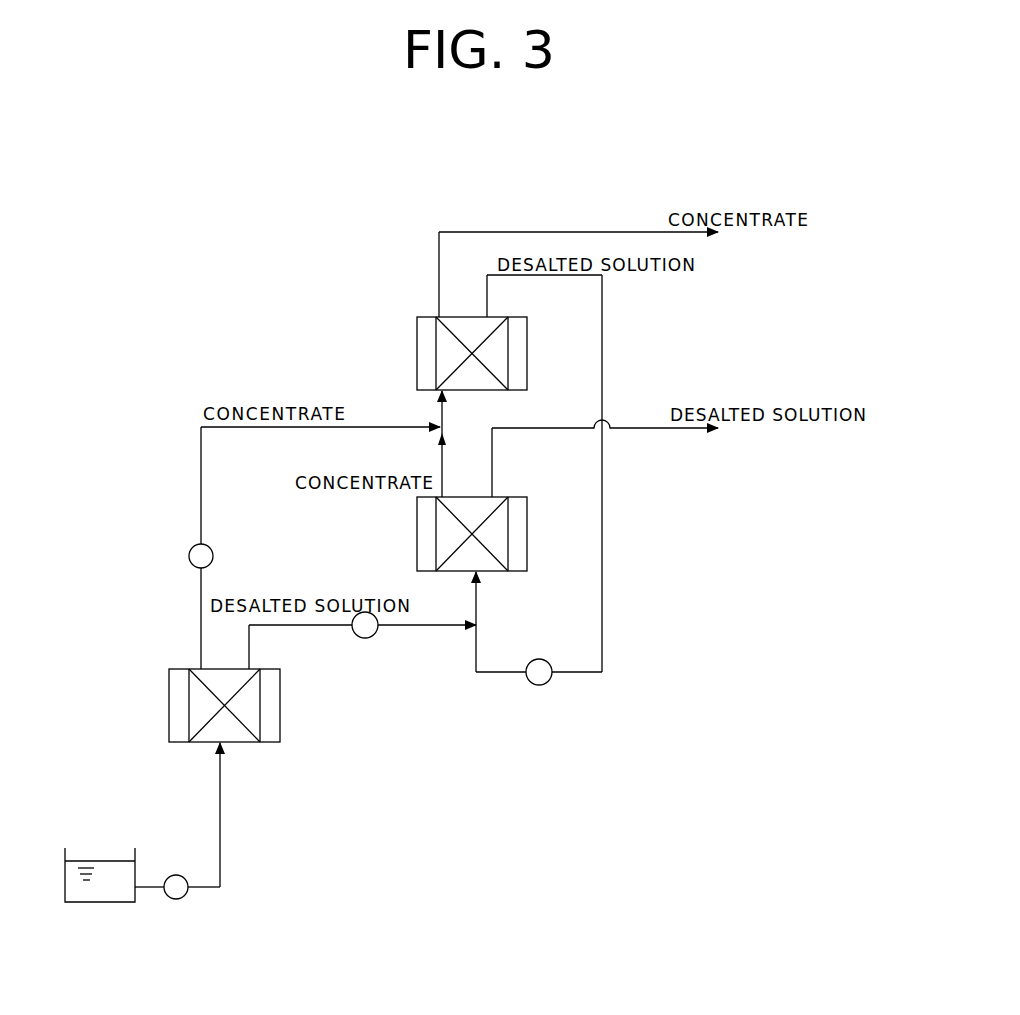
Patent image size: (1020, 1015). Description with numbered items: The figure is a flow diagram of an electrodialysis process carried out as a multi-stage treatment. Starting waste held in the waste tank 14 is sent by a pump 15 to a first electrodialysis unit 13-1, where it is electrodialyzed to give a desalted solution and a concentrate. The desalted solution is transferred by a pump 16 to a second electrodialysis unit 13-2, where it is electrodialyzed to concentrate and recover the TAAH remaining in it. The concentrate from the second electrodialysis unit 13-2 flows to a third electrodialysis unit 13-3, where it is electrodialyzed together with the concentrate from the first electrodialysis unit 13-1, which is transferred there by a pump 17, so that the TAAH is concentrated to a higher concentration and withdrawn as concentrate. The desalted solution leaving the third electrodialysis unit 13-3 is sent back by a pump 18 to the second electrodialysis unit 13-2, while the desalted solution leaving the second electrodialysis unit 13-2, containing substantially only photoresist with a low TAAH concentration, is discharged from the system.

The first electrodialysis unit 13-1 is at (280, 707).
The second electrodialysis unit 13-2 is at (417, 531).
The third electrodialysis unit 13-3 is at (417, 358).
The waste tank 14 is at (97, 902).
The pump 15 is at (176, 875).
The pump 16 is at (372, 637).
The pump 17 is at (189, 553).
The pump 18 is at (539, 685).